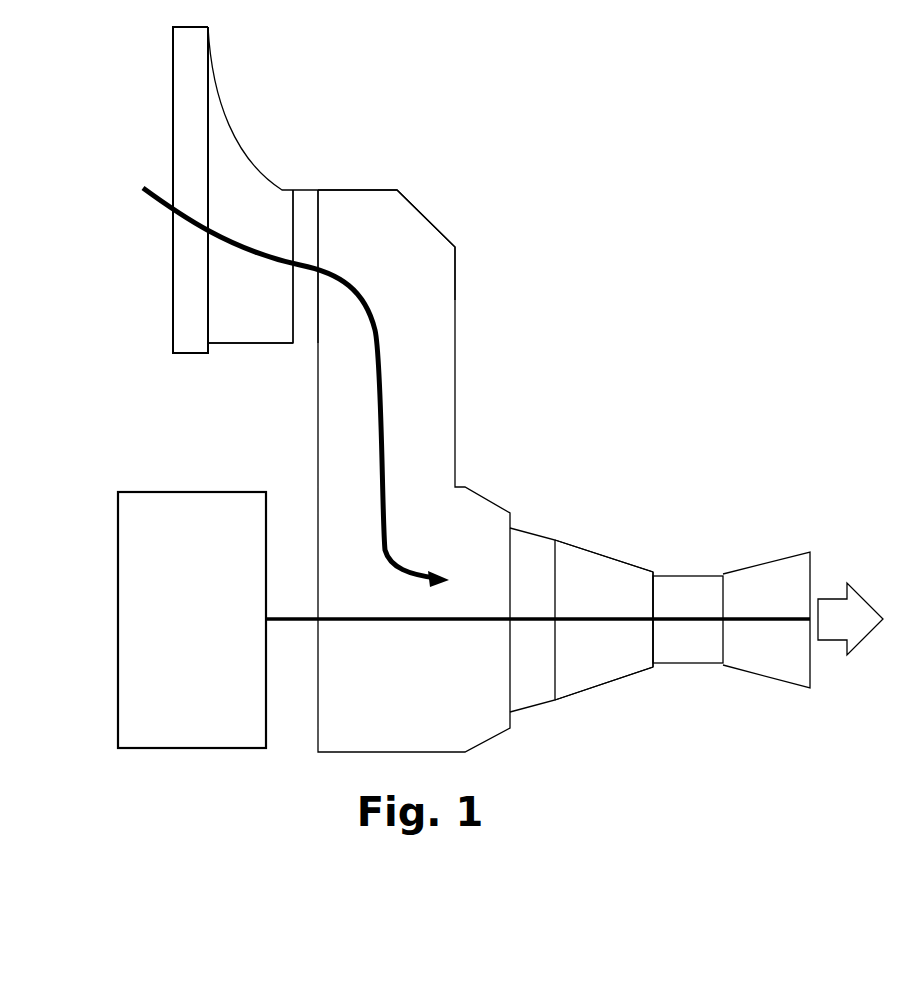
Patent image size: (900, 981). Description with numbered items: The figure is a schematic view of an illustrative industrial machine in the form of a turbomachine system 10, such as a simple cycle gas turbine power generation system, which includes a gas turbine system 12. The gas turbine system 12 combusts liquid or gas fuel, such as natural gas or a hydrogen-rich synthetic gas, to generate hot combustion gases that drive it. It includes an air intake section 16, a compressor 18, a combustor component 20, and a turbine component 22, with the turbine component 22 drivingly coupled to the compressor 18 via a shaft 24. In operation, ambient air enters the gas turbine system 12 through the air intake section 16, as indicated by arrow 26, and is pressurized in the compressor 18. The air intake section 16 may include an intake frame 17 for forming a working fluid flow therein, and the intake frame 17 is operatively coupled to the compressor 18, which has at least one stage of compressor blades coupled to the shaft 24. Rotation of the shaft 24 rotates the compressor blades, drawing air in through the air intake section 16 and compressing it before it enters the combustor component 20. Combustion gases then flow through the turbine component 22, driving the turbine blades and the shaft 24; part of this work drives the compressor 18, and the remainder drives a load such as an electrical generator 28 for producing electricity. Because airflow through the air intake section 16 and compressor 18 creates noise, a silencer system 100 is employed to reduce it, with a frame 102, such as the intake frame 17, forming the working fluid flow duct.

The turbomachine system 10 is at (580, 248).
The gas turbine system 12 is at (696, 673).
The air intake section 16 is at (302, 420).
The intake frame 17 is at (283, 333).
The compressor 18 is at (604, 620).
The combustor component 20 is at (688, 619).
The turbine component 22 is at (766, 620).
The shaft 24 is at (373, 622).
The arrow 26 is at (362, 295).
The electrical generator 28 is at (117, 618).
The silencer system 100 is at (308, 200).
The frame 102 is at (345, 227).